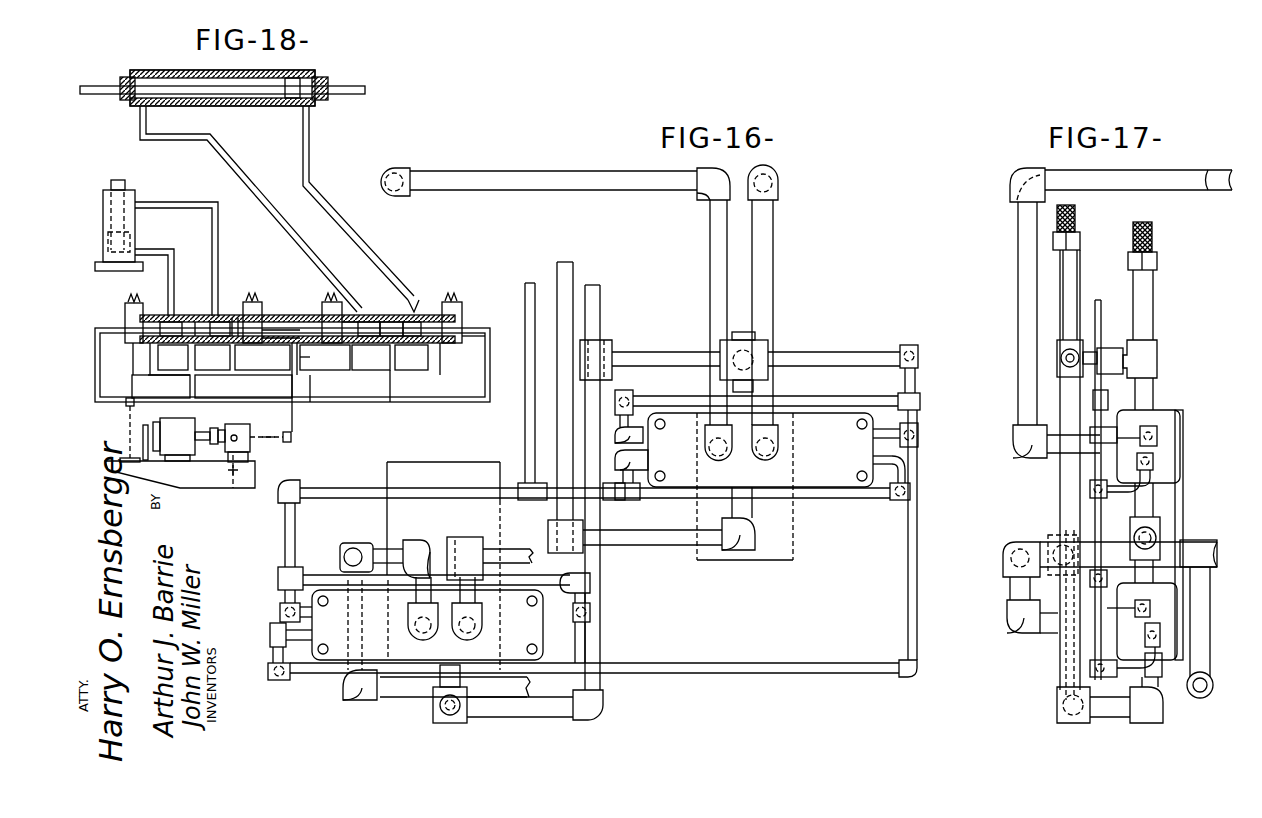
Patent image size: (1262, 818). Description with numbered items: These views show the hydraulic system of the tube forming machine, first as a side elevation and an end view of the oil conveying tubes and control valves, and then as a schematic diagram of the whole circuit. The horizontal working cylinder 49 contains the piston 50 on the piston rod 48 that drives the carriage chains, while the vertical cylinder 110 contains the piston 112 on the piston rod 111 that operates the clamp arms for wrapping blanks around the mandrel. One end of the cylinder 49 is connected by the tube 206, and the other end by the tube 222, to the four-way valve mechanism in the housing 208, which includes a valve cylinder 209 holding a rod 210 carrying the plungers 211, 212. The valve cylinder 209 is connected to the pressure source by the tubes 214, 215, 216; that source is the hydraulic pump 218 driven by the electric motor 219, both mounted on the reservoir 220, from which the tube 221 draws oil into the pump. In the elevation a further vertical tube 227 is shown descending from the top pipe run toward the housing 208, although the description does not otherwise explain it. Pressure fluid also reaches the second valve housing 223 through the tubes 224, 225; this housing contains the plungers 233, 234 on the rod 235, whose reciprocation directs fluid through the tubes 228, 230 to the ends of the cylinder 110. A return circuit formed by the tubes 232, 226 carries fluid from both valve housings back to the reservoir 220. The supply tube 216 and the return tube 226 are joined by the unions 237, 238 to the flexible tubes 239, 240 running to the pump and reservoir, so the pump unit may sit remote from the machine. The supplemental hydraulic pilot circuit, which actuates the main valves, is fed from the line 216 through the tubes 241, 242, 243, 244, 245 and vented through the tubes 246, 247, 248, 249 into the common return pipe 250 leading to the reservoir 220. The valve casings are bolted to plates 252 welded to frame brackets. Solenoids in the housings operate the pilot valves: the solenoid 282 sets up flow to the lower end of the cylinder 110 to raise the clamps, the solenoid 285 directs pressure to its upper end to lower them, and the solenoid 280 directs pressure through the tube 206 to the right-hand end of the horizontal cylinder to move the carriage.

In FIG. 18, the piston rod 48 is at (345, 90).
In FIG. 18, the working cylinder 49 is at (305, 72).
In FIG. 18, the piston 50 is at (298, 102).
In FIG. 18, the cylinder 110 is at (104, 212).
In FIG. 18, the piston rod 111 is at (126, 188).
In FIG. 18, the piston 112 is at (131, 242).
In FIG. 18, the tube 206 is at (310, 162).
In FIG. 16, the tube 206 is at (773, 213).
In FIG. 18, the valve housing 208 is at (429, 302).
In FIG. 16, the valve housing 208 is at (838, 453).
In FIG. 18, the valve cylinder 209 is at (414, 320).
In FIG. 18, the rod 210 is at (365, 305).
In FIG. 18, the valve plunger 211 is at (376, 358).
In FIG. 18, the valve plunger 212 is at (418, 358).
In FIG. 18, the tube 214 is at (391, 385).
In FIG. 16, the tube 214 is at (740, 387).
In FIG. 18, the tube 215 is at (318, 402).
In FIG. 16, the tube 215 is at (665, 345).
In FIG. 18, the pressure supply tube 216 is at (292, 437).
In FIG. 16, the pressure supply tube 216 is at (603, 295).
In FIG. 17, the pressure supply tube 216 is at (1060, 283).
In FIG. 18, the hydraulic pump 218 is at (240, 430).
In FIG. 18, the electric motor 219 is at (182, 428).
In FIG. 18, the reservoir 220 is at (215, 487).
In FIG. 18, the tube 221 is at (240, 470).
In FIG. 18, the tube 222 is at (228, 160).
In FIG. 16, the tube 222 is at (470, 178).
In FIG. 18, the valve housing 223 is at (238, 316).
In FIG. 16, the valve housing 223 is at (325, 662).
In FIG. 18, the tube 224 is at (243, 389).
In FIG. 16, the tube 224 is at (592, 583).
In FIG. 17, the tube 224 is at (1067, 665).
In FIG. 18, the tube 225 is at (161, 388).
In FIG. 16, the tube 225 is at (437, 682).
In FIG. 17, the tube 225 is at (1150, 703).
In FIG. 18, the fluid return tube 226 is at (150, 363).
In FIG. 16, the fluid return tube 226 is at (573, 272).
In FIG. 17, the fluid return tube 226 is at (1153, 285).
In FIG. 16, the pipe 227 is at (715, 307).
In FIG. 18, the tube 228 is at (219, 228).
In FIG. 16, the tube 228 is at (512, 548).
In FIG. 17, the tube 228 is at (1210, 553).
In FIG. 18, the tube 230 is at (170, 280).
In FIG. 16, the tube 230 is at (393, 697).
In FIG. 17, the tube 230 is at (1207, 662).
In FIG. 18, the return tube 232 is at (262, 356).
In FIG. 18, the plunger 233 is at (179, 356).
In FIG. 18, the plunger 234 is at (218, 357).
In FIG. 18, the rod 235 is at (210, 325).
In FIG. 16, the rod 235 is at (688, 547).
In FIG. 18, the union 237 is at (272, 440).
In FIG. 17, the union 237 is at (1053, 242).
In FIG. 18, the union 238 is at (128, 406).
In FIG. 17, the union 238 is at (1157, 260).
In FIG. 18, the flexible tube 239 is at (237, 442).
In FIG. 17, the flexible tube 239 is at (1057, 218).
In FIG. 17, the flexible tube 240 is at (1150, 238).
In FIG. 18, the tube 241 is at (321, 363).
In FIG. 16, the tube 241 is at (822, 362).
In FIG. 17, the tube 241 is at (1065, 350).
In FIG. 18, the tube 242 is at (312, 310).
In FIG. 16, the tube 242 is at (815, 402).
In FIG. 18, the tube 243 is at (465, 334).
In FIG. 16, the tube 243 is at (918, 435).
In FIG. 18, the tube 244 is at (286, 312).
In FIG. 16, the tube 244 is at (605, 667).
In FIG. 18, the tube 245 is at (125, 330).
In FIG. 16, the tube 245 is at (272, 645).
In FIG. 18, the tube 246 is at (130, 356).
In FIG. 16, the tube 246 is at (282, 608).
In FIG. 18, the tube 247 is at (286, 323).
In FIG. 16, the tube 247 is at (592, 610).
In FIG. 18, the tube 248 is at (327, 354).
In FIG. 16, the tube 248 is at (643, 468).
In FIG. 18, the tube 249 is at (463, 359).
In FIG. 16, the tube 249 is at (912, 484).
In FIG. 18, the return pipe 250 is at (127, 438).
In FIG. 16, the return pipe 250 is at (540, 275).
In FIG. 17, the return pipe 250 is at (1094, 307).
In FIG. 16, the plate 252 is at (445, 463).
In FIG. 18, the solenoid 280 is at (462, 310).
In FIG. 18, the solenoid 282 is at (127, 312).
In FIG. 18, the solenoid 285 is at (250, 305).